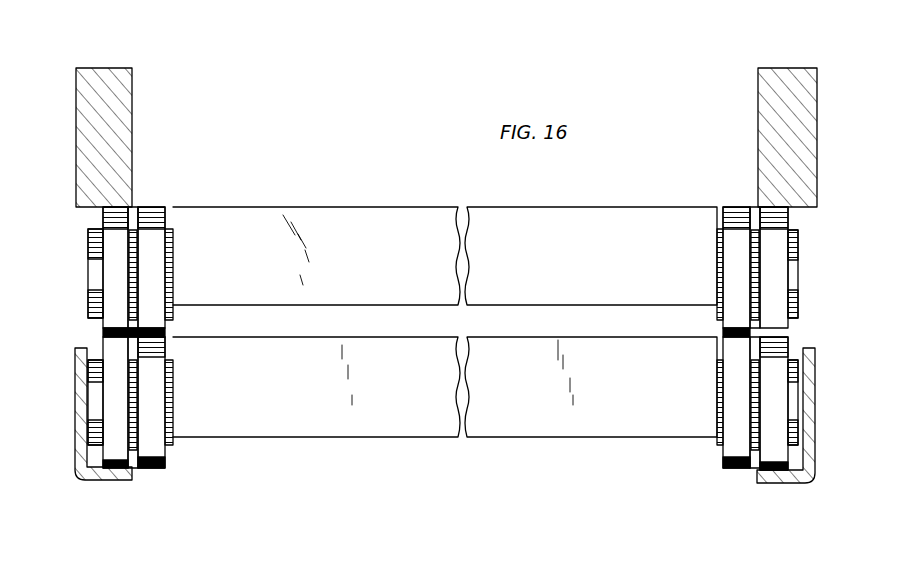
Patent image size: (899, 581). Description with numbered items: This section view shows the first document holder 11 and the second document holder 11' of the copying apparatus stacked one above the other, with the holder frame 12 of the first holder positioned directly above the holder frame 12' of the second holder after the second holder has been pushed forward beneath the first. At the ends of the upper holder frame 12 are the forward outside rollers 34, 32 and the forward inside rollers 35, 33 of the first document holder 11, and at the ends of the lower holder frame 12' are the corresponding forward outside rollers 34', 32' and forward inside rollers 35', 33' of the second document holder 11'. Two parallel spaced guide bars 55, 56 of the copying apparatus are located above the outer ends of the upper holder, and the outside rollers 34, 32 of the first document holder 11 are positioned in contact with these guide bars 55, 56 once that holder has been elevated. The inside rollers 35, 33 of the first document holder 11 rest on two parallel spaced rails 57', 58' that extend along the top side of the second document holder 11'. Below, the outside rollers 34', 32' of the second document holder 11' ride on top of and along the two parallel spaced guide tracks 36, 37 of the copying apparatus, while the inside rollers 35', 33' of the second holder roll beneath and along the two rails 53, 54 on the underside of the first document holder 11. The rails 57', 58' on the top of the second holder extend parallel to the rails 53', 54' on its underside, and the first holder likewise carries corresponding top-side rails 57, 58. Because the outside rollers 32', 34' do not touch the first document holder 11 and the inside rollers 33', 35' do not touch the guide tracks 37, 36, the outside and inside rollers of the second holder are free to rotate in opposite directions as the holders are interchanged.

The first document holder 11 is at (445, 209).
The second document holder 11' is at (445, 433).
The holder frame 12 is at (445, 226).
The holder frame 12' is at (445, 415).
The outside idler roller 32 is at (809, 266).
The outside idler roller 32' is at (812, 378).
The inside idler roller 33 is at (693, 274).
The inside idler roller 33' is at (694, 402).
The outside idler roller 34 is at (78, 270).
The outside idler roller 34' is at (68, 387).
The inside idler roller 35 is at (186, 274).
The inside idler roller 35' is at (189, 402).
The guide track 36 is at (112, 480).
The guide track 37 is at (787, 483).
The rail 53 is at (167, 323).
The rail 53' is at (183, 476).
The rail 54 is at (695, 323).
The rail 54' is at (706, 478).
The guide bar 55 is at (132, 92).
The guide bar 56 is at (757, 91).
The rail 57 is at (135, 238).
The rail 57' is at (159, 400).
The rail 58 is at (745, 243).
The rail 58' is at (721, 402).